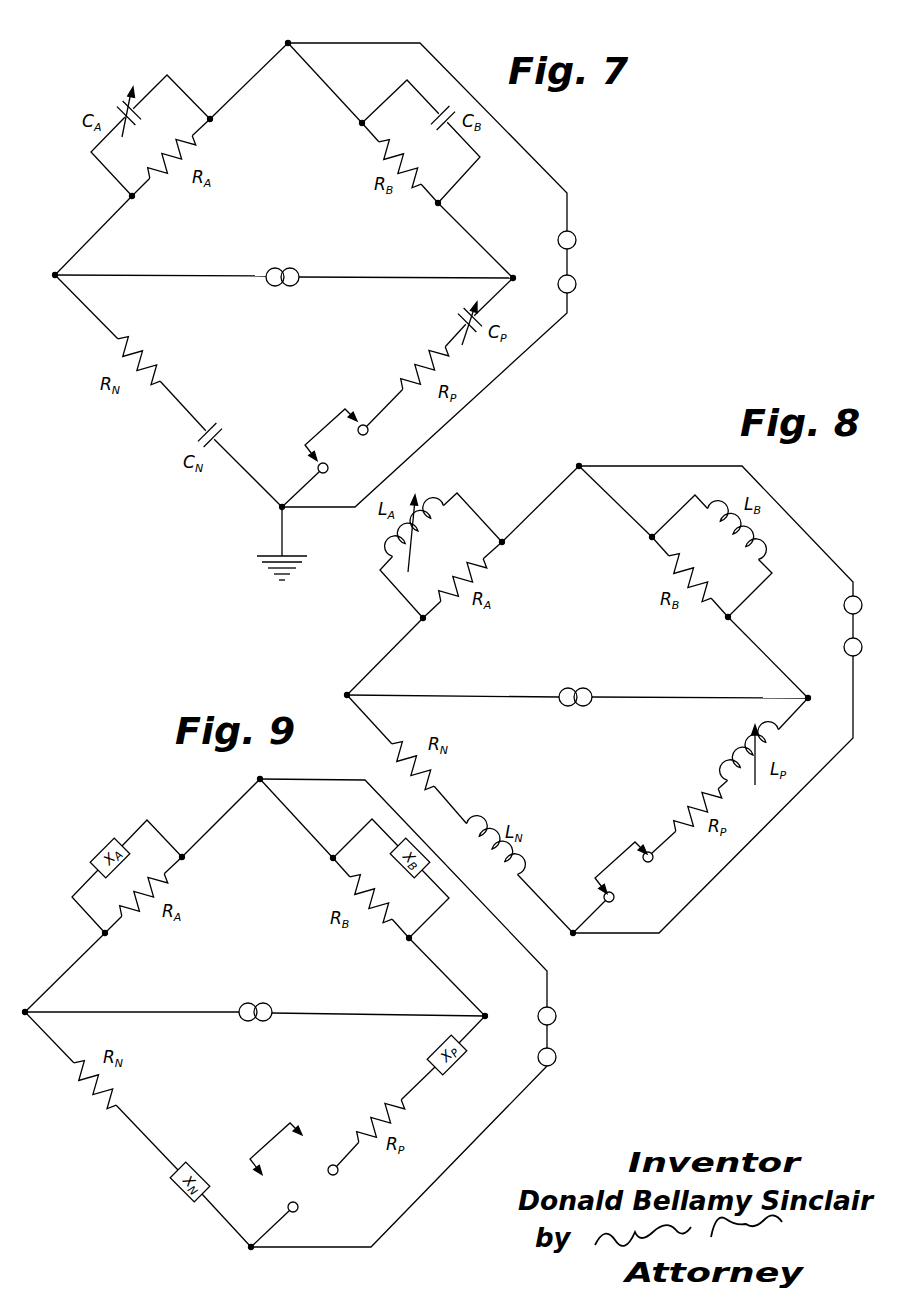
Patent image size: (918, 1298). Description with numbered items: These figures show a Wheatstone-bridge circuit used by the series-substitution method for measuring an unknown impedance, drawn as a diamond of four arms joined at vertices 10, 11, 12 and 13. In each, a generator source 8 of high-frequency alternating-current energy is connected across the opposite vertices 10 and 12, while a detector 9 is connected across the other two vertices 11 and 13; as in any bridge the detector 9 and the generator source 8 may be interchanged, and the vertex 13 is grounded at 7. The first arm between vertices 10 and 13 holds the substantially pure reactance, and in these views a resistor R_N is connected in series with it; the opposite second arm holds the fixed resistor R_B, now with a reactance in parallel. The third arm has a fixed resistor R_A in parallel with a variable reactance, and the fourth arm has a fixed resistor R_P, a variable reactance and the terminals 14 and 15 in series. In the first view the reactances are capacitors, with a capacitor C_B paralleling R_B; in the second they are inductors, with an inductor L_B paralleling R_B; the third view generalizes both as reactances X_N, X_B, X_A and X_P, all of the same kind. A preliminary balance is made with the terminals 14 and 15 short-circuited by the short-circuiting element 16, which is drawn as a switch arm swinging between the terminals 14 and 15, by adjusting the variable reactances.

In FIG. 7, the ground 7 is at (265, 567).
In FIG. 7, the generator source 8 is at (272, 268).
In FIG. 8, the generator source 8 is at (568, 688).
In FIG. 9, the generator source 8 is at (248, 1003).
In FIG. 7, the detector 9 is at (582, 262).
In FIG. 8, the detector 9 is at (846, 625).
In FIG. 9, the detector 9 is at (558, 1036).
In FIG. 7, the bridge vertex 10 is at (55, 275).
In FIG. 8, the bridge vertex 10 is at (347, 695).
In FIG. 9, the bridge vertex 10 is at (25, 1012).
In FIG. 7, the bridge vertex 11 is at (290, 43).
In FIG. 8, the bridge vertex 11 is at (580, 465).
In FIG. 9, the bridge vertex 11 is at (261, 778).
In FIG. 7, the bridge vertex 12 is at (514, 277).
In FIG. 8, the bridge vertex 12 is at (809, 697).
In FIG. 9, the bridge vertex 12 is at (486, 1015).
In FIG. 7, the bridge vertex 13 is at (282, 507).
In FIG. 8, the bridge vertex 13 is at (574, 934).
In FIG. 9, the bridge vertex 13 is at (252, 1248).
In FIG. 7, the terminal 14 is at (318, 468).
In FIG. 8, the terminal 14 is at (604, 897).
In FIG. 9, the terminal 14 is at (289, 1204).
In FIG. 7, the terminal 15 is at (363, 425).
In FIG. 8, the terminal 15 is at (648, 852).
In FIG. 9, the terminal 15 is at (331, 1165).
In FIG. 7, the short-circuiting element 16 is at (322, 428).
In FIG. 8, the short-circuiting element 16 is at (612, 862).
In FIG. 9, the short-circuiting element 16 is at (262, 1148).